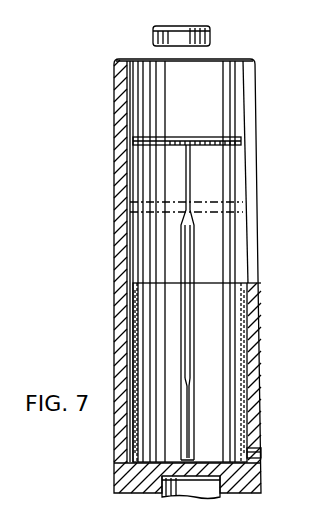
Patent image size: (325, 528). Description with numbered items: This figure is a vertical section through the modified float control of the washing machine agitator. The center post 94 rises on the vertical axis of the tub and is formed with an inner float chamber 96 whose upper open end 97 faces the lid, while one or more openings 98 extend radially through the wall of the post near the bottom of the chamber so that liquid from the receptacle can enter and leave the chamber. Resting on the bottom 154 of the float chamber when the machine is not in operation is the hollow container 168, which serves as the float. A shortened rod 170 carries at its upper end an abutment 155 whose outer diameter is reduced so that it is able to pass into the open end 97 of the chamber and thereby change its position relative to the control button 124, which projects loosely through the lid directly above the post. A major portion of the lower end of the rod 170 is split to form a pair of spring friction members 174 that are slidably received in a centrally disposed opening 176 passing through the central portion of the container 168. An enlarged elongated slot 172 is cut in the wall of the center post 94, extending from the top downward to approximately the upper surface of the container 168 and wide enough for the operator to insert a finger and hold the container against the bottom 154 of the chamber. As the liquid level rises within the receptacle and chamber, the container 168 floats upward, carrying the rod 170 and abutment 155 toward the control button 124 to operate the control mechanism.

The center post 94 is at (123, 308).
The float chamber 96 is at (123, 176).
The upper open end 97 is at (135, 62).
The openings 98 is at (258, 452).
The control button 124 is at (150, 37).
The bottom of the float chamber 154 is at (125, 468).
The abutment 155 is at (214, 137).
The hollow container 168 is at (230, 355).
The rod 170 is at (222, 186).
The elongated slot 172 is at (253, 228).
The spring friction members 174 is at (183, 243).
The opening 176 is at (195, 410).